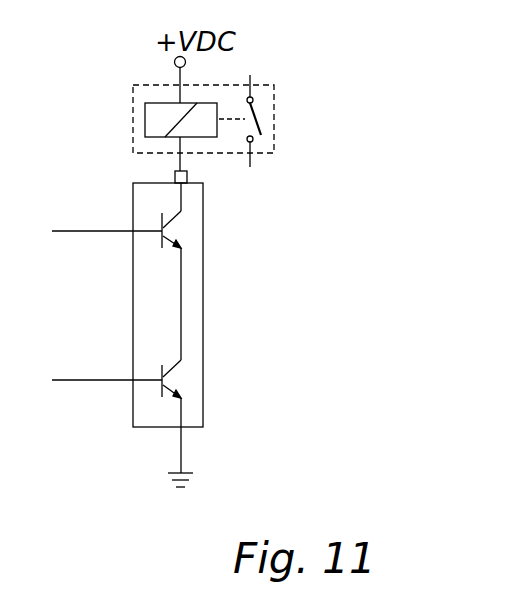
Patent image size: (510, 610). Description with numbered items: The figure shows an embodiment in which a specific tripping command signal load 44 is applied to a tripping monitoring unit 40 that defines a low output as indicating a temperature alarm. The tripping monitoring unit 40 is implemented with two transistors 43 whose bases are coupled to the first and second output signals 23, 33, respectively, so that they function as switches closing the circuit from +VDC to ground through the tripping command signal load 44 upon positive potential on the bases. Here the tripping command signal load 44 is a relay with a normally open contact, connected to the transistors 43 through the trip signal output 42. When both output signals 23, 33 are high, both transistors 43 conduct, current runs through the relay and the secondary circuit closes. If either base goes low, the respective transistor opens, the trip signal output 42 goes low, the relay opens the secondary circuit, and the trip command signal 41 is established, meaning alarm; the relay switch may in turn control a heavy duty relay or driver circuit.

The first output signal 23 is at (80, 231).
The second output signal 33 is at (87, 381).
The tripping monitoring unit 40 is at (175, 313).
The trip command signal 41 is at (178, 148).
The trip signal output 42 is at (175, 177).
The transistors 43 is at (160, 243).
The tripping command signal load 44 is at (133, 92).